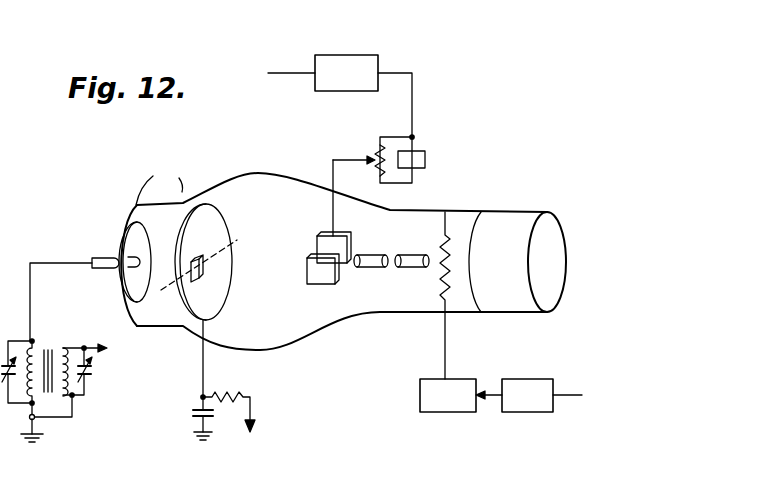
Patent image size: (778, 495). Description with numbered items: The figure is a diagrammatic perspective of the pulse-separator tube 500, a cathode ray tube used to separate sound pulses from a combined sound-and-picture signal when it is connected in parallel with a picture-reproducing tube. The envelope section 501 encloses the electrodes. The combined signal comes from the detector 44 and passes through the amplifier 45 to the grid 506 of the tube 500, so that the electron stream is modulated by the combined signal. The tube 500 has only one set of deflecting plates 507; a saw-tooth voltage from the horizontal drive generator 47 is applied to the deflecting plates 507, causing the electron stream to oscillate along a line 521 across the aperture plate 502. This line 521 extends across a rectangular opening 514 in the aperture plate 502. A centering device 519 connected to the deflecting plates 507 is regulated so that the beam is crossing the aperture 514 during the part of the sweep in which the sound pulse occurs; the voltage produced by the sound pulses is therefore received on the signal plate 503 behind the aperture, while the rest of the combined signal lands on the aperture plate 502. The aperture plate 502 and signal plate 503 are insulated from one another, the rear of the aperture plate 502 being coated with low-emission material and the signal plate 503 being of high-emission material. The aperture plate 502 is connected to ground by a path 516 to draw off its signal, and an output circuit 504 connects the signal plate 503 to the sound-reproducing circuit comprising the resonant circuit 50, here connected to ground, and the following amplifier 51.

The detector 44 is at (537, 413).
The amplifier 45 is at (465, 413).
The horizontal drive generator 47 is at (360, 55).
The resonant circuit 50 is at (47, 378).
The amplifier of the sound-reproducing circuit 51 is at (122, 355).
The separating tube 500 is at (282, 153).
The envelope end section 501 is at (161, 181).
The aperture plate 502 is at (213, 229).
The signal plate 503 is at (131, 228).
The output circuit 504 is at (78, 256).
The grid 506 is at (447, 230).
The deflecting plates 507 is at (326, 285).
The rectangular opening 514 is at (203, 276).
The path to ground 516 is at (205, 373).
The centering device 519 is at (425, 160).
The line 521 is at (218, 252).